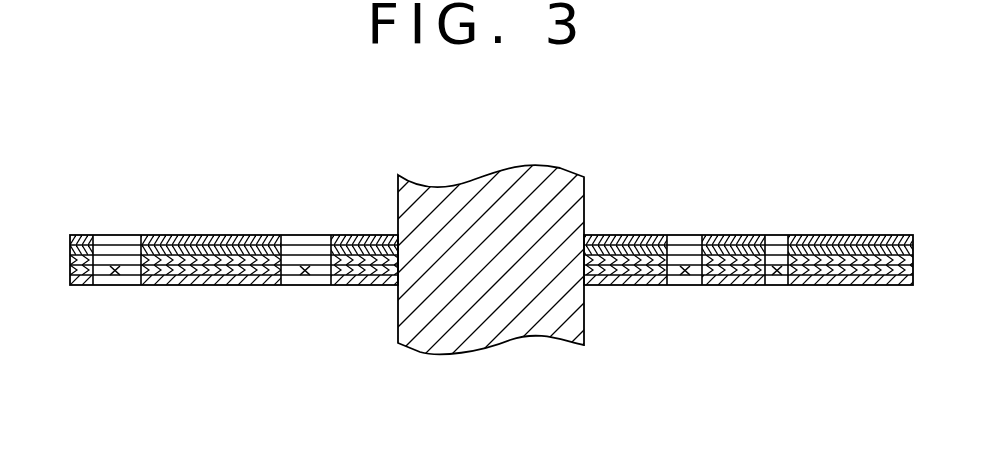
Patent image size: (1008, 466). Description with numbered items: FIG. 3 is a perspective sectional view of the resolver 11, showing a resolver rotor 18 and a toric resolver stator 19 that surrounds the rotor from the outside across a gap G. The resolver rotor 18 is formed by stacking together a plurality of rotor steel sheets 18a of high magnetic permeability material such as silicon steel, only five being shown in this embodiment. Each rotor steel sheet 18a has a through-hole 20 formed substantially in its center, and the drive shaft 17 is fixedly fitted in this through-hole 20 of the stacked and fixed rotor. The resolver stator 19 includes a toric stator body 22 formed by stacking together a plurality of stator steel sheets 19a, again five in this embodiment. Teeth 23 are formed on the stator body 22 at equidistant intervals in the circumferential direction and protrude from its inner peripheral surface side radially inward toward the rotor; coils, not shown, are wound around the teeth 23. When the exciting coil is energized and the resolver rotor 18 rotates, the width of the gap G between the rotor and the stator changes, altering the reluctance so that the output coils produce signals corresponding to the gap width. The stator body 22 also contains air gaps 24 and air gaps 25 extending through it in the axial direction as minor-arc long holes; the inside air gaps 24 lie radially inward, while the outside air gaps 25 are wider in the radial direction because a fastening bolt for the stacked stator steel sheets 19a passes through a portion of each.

The resolver 11 is at (777, 203).
The drive shaft 17 is at (478, 187).
The resolver rotor 18 is at (610, 285).
The rotor steel sheets 18a is at (655, 285).
The resolver stator 19 is at (107, 211).
The stator steel sheets 19a is at (170, 235).
The through-hole 20 is at (398, 290).
The stator body 22 is at (258, 235).
The teeth 23 is at (270, 285).
The air gaps 24 is at (777, 275).
The air gaps 25 is at (115, 275).
The gap G is at (305, 275).